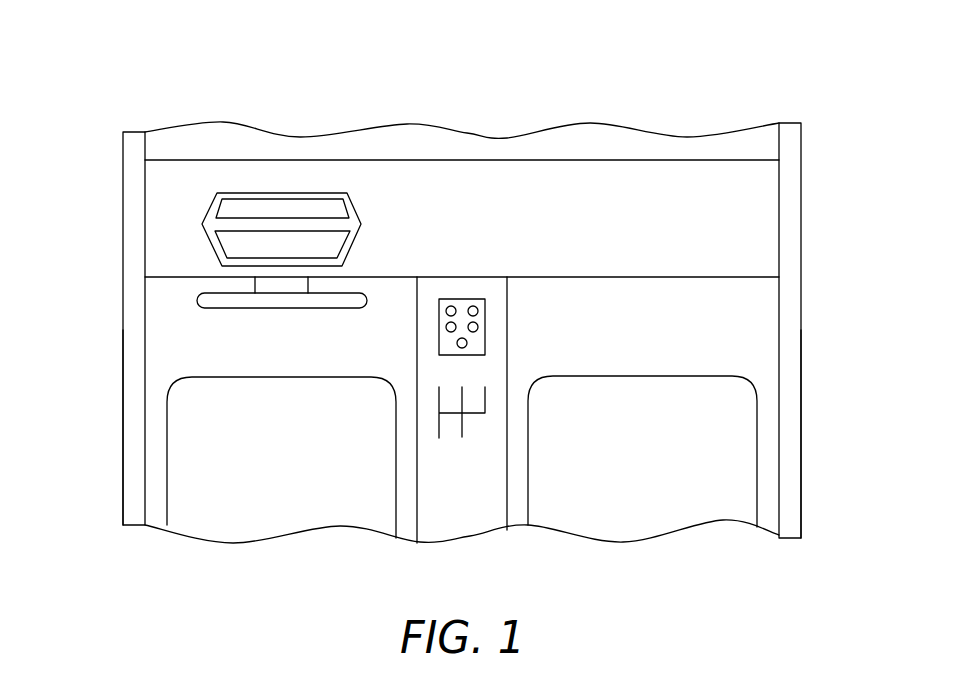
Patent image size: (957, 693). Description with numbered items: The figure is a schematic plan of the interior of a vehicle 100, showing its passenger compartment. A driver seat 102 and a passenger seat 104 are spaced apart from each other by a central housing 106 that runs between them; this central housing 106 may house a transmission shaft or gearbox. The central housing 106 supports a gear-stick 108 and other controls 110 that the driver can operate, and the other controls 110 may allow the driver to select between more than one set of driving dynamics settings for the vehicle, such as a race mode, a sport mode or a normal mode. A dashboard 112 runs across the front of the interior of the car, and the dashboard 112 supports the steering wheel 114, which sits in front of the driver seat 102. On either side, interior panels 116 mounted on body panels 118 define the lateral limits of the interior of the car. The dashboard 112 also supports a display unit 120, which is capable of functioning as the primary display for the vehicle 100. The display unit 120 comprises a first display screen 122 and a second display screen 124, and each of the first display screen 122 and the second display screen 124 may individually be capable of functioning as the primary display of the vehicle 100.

The vehicle 100 is at (690, 90).
The driver seat 102 is at (283, 528).
The passenger seat 104 is at (643, 530).
The central housing 106 is at (463, 528).
The gear-stick 108 is at (462, 437).
The other controls 110 is at (485, 310).
The dashboard 112 is at (462, 185).
The steering wheel 114 is at (283, 308).
The interior panels 116 is at (145, 187).
The body panels 118 is at (123, 320).
The display unit 120 is at (360, 208).
The first display screen 122 is at (327, 245).
The second display screen 124 is at (282, 207).